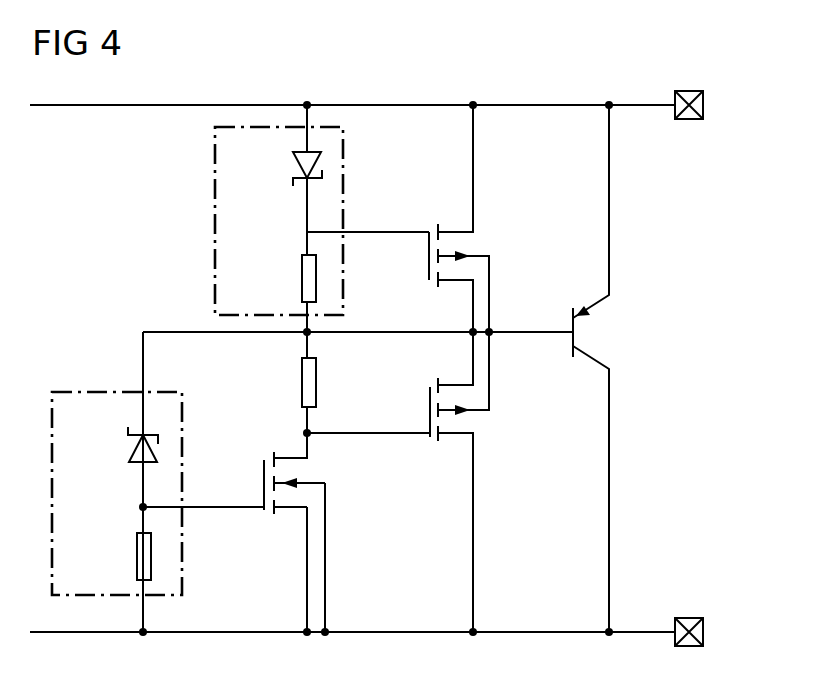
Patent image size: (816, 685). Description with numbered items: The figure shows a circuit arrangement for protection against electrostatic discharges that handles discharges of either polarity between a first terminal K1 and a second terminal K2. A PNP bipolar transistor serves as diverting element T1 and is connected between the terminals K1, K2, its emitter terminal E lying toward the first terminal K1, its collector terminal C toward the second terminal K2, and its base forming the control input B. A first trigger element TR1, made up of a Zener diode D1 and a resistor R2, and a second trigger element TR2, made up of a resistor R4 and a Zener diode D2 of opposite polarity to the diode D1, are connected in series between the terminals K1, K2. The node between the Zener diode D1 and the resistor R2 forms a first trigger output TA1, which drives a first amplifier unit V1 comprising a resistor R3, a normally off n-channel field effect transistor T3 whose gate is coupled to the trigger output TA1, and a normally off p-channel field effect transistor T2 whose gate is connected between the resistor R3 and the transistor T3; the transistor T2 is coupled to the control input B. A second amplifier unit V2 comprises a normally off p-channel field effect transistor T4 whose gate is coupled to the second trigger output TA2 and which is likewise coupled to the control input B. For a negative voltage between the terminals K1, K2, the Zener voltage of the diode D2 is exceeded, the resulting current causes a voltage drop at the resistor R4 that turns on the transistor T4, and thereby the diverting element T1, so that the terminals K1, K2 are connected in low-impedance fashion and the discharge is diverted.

The first terminal K1 is at (692, 121).
The second terminal K2 is at (690, 616).
The first trigger element TR1 is at (75, 390).
The second trigger element TR2 is at (213, 205).
The Zener diode D1 is at (135, 448).
The Zener diode D2 is at (297, 165).
The resistor R2 is at (135, 560).
The resistor R3 is at (300, 383).
The resistor R4 is at (300, 280).
The diverting element T1 is at (564, 368).
The p-channel field effect transistor T2 is at (428, 410).
The n-channel field effect transistor T3 is at (262, 483).
The p-channel field effect transistor T4 is at (428, 256).
The first trigger output TA1 is at (188, 510).
The second trigger output TA2 is at (345, 232).
The first amplifier unit V1 is at (500, 445).
The second amplifier unit V2 is at (493, 205).
The emitter terminal E is at (591, 211).
The control input B is at (531, 316).
The collector terminal C is at (612, 327).